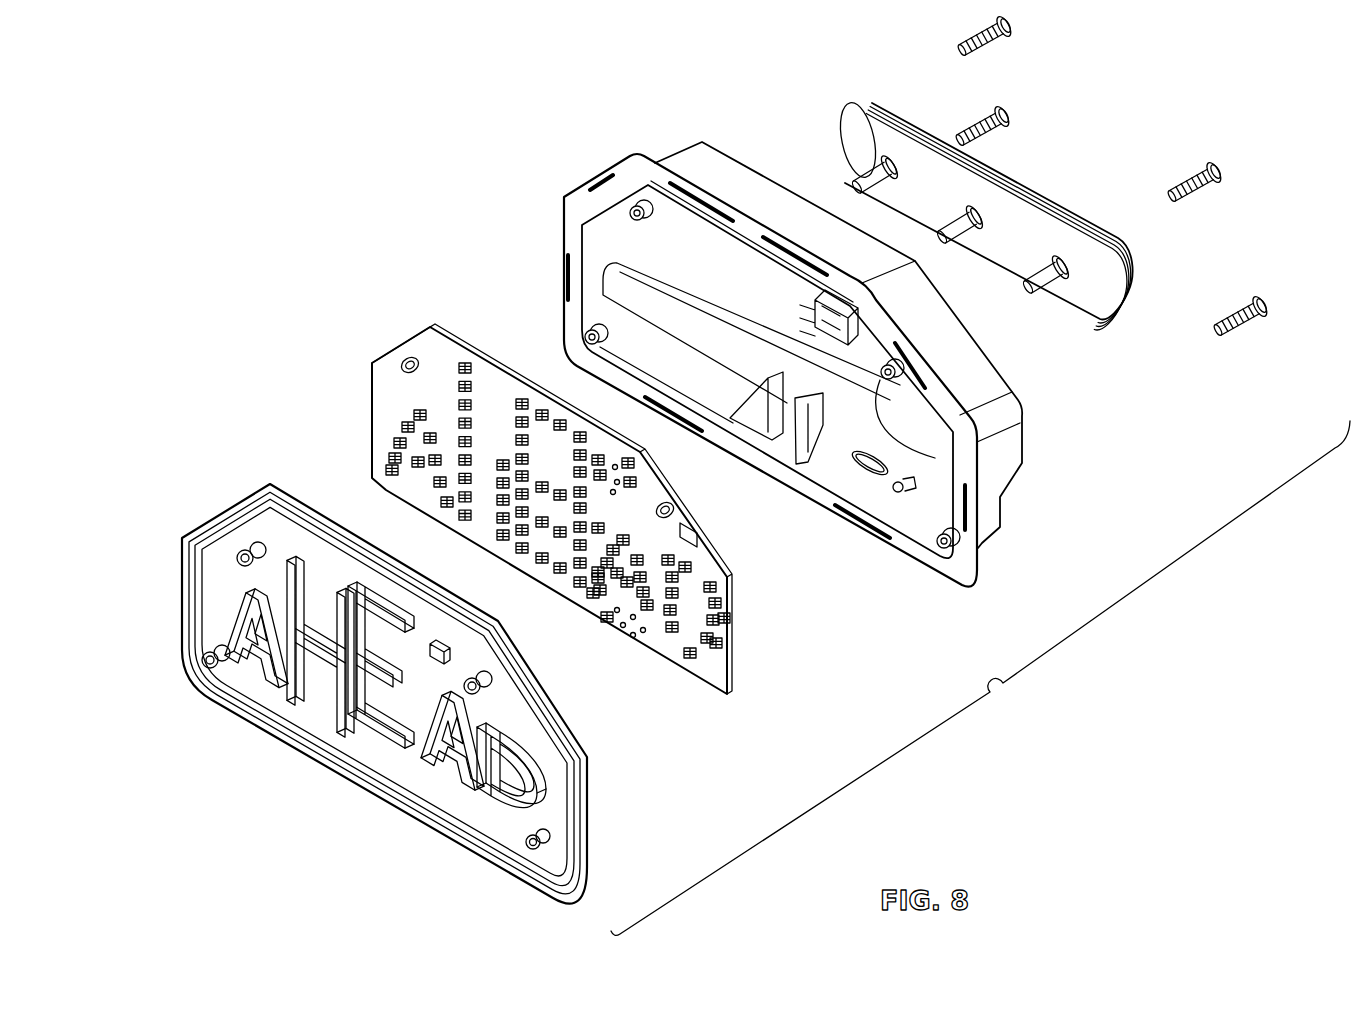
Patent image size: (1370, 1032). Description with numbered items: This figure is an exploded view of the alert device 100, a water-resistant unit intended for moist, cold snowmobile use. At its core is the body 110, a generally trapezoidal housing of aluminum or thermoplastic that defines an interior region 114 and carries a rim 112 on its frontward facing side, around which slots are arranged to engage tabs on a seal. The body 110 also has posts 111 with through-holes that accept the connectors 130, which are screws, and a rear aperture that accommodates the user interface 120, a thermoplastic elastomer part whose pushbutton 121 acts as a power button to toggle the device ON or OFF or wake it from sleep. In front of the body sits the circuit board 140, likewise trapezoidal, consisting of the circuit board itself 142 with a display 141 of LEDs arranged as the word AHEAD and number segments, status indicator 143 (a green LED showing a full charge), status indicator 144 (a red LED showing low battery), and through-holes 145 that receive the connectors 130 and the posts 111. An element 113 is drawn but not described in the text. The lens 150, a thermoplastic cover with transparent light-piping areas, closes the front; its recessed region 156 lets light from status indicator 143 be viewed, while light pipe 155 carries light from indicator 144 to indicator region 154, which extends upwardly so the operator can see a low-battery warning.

The alert device 100 is at (180, 203).
The body 110 is at (553, 293).
The posts 111 is at (632, 214).
The rim 112 is at (962, 580).
The electrical connector 113 is at (855, 318).
The interior region 114 is at (680, 255).
The user interface 120 is at (836, 124).
The pushbutton 121 is at (857, 112).
The connectors 130 is at (990, 52).
The circuit board 140 is at (360, 434).
The display 141 is at (714, 642).
The circuit board itself 142 is at (428, 343).
The status indicator 143 is at (630, 487).
The status indicator 144 is at (634, 467).
The through-holes 145 is at (405, 368).
The lens 150 is at (178, 600).
The indicator region 154 is at (403, 567).
The light pipe 155 is at (443, 633).
The region 156 is at (437, 632).